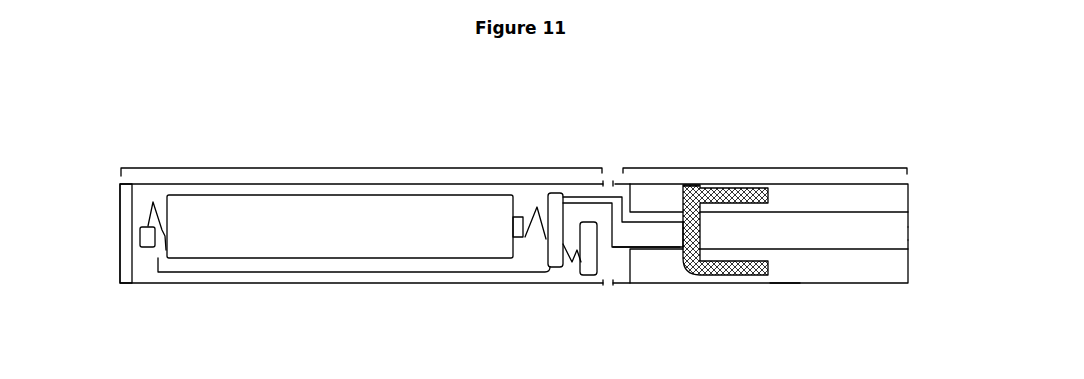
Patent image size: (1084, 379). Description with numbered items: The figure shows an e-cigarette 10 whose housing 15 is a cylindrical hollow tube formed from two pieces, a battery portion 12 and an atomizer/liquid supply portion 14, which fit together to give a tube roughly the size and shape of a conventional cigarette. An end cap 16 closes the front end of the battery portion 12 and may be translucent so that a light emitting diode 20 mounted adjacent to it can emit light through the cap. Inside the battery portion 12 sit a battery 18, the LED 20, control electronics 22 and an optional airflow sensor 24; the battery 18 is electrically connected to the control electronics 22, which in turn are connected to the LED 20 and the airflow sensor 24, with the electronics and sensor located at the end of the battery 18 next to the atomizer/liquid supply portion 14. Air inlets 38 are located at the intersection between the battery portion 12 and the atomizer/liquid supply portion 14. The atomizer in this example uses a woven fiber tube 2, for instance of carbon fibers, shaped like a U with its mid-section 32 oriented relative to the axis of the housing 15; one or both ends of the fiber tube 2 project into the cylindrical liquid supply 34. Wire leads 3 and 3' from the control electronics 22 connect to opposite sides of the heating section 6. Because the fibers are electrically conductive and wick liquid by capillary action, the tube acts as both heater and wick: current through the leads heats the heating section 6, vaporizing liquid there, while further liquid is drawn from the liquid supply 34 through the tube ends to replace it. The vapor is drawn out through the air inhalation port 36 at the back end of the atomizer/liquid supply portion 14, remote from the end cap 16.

The e-cigarette 10 is at (272, 146).
The battery portion 12 is at (358, 168).
The atomizer/liquid supply portion 14 is at (763, 168).
The end cap 16 is at (128, 268).
The battery 18 is at (277, 248).
The light emitting diode 20 is at (145, 247).
The control electronics 22 is at (558, 187).
The airflow sensor 24 is at (588, 275).
The air inlets 38 is at (608, 184).
The liquid supply 34 is at (855, 195).
The air inhalation port 36 is at (912, 233).
The mid-section 32 is at (840, 232).
The heating section 6 is at (701, 222).
The woven fiber tube 2 is at (686, 180).
The wire lead 3 is at (651, 277).
The wire lead 3' is at (648, 274).
The housing 15 is at (783, 285).